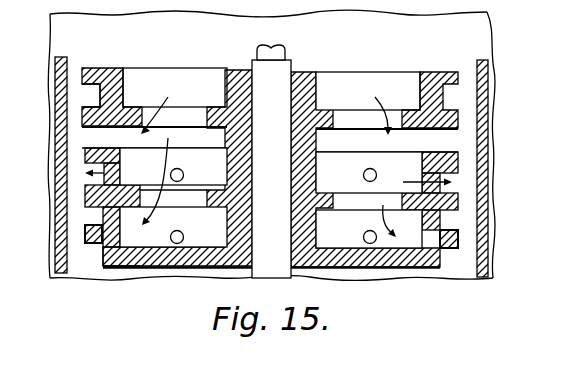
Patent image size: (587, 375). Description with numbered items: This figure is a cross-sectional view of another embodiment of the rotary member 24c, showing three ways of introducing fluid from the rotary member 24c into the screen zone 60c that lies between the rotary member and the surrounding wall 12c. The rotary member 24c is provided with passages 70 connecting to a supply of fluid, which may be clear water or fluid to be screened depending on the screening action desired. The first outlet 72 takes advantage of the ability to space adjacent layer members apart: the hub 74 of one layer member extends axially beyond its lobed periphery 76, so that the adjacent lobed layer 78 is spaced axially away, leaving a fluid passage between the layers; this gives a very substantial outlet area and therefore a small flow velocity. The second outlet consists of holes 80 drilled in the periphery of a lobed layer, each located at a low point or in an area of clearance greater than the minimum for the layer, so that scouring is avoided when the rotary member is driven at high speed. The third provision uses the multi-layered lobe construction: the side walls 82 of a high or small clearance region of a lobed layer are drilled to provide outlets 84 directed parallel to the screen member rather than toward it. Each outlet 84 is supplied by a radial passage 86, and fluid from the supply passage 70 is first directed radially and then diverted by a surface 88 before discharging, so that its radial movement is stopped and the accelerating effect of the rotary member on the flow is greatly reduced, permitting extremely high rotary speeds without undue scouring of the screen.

The passages 70 is at (203, 80).
The first outlet 72 is at (105, 137).
The hub 74 is at (253, 175).
The lobed periphery 76 is at (85, 157).
The adjacent lobed layer 78 is at (87, 108).
The holes 80 is at (121, 170).
The side walls 82 is at (97, 250).
The outlets 84 is at (97, 222).
The radial passage 86 is at (113, 256).
The surface 88 is at (95, 238).
The rotary member 24c is at (410, 62).
The screen zone 60c is at (468, 132).
The housing wall 12c is at (490, 187).